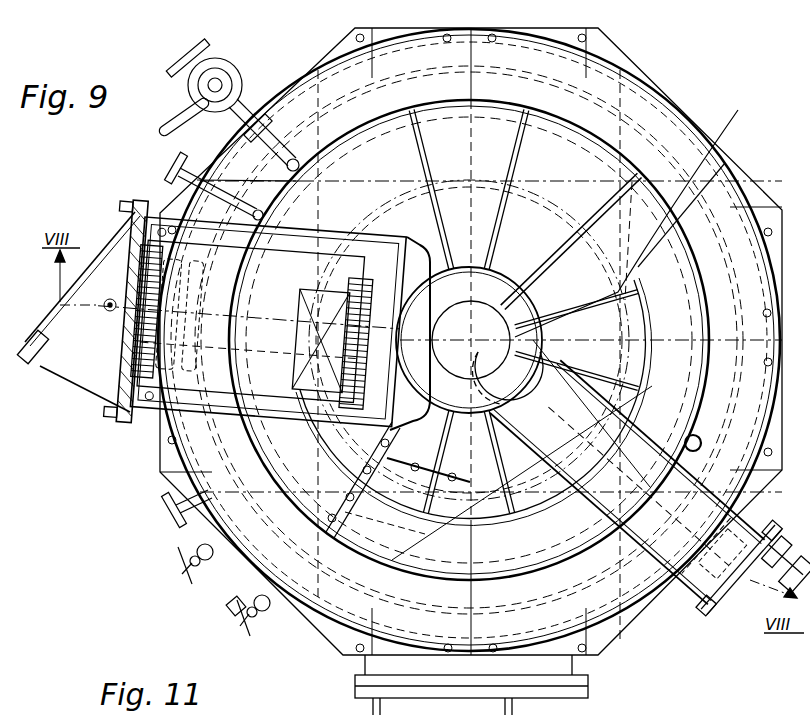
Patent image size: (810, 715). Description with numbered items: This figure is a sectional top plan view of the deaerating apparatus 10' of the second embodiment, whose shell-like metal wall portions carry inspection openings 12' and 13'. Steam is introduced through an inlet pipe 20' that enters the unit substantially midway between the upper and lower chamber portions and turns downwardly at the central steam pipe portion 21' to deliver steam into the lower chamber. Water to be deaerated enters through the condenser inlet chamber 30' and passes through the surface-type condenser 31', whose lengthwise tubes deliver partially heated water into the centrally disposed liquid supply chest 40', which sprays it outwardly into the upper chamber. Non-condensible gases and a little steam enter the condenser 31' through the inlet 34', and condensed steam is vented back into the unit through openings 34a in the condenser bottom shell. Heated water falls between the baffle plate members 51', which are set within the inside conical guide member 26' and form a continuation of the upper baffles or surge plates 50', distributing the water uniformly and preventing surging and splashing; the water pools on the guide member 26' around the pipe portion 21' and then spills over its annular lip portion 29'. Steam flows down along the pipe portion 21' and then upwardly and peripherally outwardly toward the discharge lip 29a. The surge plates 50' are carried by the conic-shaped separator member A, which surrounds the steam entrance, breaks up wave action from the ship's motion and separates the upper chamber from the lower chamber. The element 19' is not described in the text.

In FIG. 9, the deaerating apparatus 10' is at (469, 340).
In FIG. 9, the inspection opening 13' is at (398, 480).
In FIG. 9, the radial partition 19' is at (469, 311).
In FIG. 9, the steam inlet pipe 20' is at (646, 490).
In FIG. 9, the central steam pipe portion 21' is at (469, 340).
In FIG. 9, the inside conical guide member 26' is at (577, 326).
In FIG. 9, the annular lip portion 29' is at (522, 387).
In FIG. 9, the discharge lip 29a is at (612, 241).
In FIG. 9, the condenser inlet chamber 30' is at (78, 312).
In FIG. 9, the condenser 31' is at (259, 320).
In FIG. 9, the condenser inlet 34' is at (279, 354).
In FIG. 9, the vent openings 34a is at (338, 240).
In FIG. 9, the liquid supply chest 40' is at (491, 374).
In FIG. 9, the surge plates 50' is at (571, 241).
In FIG. 9, the baffle plate members 51' is at (591, 368).
In FIG. 9, the conic-shaped separator member A is at (629, 215).
In FIG. 11, the inspection opening 12' is at (398, 711).